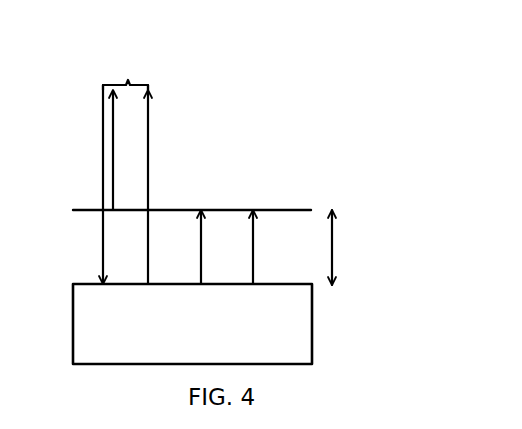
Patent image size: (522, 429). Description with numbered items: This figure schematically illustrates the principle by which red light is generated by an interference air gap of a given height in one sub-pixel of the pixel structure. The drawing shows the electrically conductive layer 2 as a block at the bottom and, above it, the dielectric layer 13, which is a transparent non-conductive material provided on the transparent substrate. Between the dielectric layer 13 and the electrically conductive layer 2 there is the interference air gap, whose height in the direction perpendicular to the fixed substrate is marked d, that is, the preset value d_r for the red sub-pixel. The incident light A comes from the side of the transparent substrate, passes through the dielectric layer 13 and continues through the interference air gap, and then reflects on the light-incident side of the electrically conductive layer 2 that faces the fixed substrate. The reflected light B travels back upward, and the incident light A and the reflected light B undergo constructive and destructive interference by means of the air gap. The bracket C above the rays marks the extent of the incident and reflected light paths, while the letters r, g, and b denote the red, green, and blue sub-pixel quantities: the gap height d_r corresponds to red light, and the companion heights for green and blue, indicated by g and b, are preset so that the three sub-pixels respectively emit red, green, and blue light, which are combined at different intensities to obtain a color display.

The electrically conductive layer 2 is at (312, 345).
The dielectric layer 13 is at (230, 210).
The incident light A is at (102, 228).
The reflected light B is at (113, 165).
The rod width dimension C is at (125, 64).
The rod radius r is at (150, 250).
The gap dimension g is at (202, 250).
The width dimension b is at (255, 250).
The height of interference air gap (d_r) d is at (349, 247).